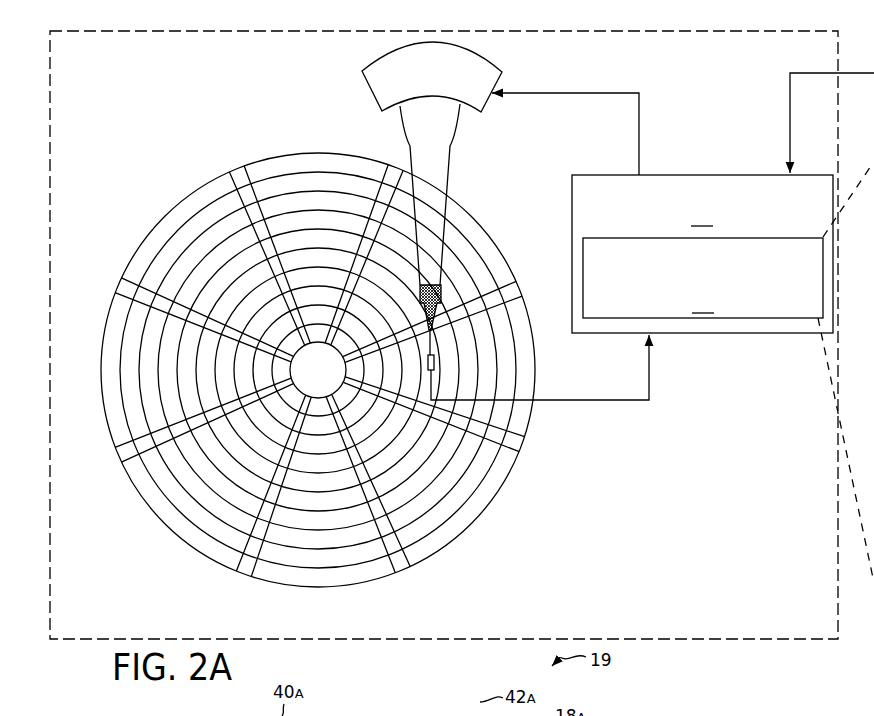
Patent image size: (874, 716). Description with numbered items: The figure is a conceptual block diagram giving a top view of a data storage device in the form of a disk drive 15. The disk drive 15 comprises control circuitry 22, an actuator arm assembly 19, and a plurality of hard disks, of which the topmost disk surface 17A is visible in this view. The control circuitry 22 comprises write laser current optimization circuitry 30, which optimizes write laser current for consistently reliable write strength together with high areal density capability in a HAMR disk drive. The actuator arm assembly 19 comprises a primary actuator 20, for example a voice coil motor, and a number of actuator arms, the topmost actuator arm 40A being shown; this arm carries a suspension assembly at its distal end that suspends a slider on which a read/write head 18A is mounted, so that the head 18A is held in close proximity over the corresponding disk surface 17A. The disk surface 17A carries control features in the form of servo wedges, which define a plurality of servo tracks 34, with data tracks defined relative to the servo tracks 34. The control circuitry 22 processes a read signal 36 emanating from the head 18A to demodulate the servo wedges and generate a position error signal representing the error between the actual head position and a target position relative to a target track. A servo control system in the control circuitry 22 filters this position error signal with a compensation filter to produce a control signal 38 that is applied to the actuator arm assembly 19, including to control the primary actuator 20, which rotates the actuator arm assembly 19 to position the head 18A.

The disk drive 15 is at (768, 645).
The disk surface 17A is at (325, 363).
The head 18A is at (440, 372).
The actuator arm assembly 19 is at (478, 218).
The primary actuator 20 is at (498, 99).
The control circuitry 22 is at (723, 203).
The write laser current optimization circuitry 30 is at (703, 278).
The servo tracks 34 is at (322, 178).
The read signal 36 is at (630, 400).
The control signal 38 is at (639, 120).
The actuator arm 40A is at (451, 173).